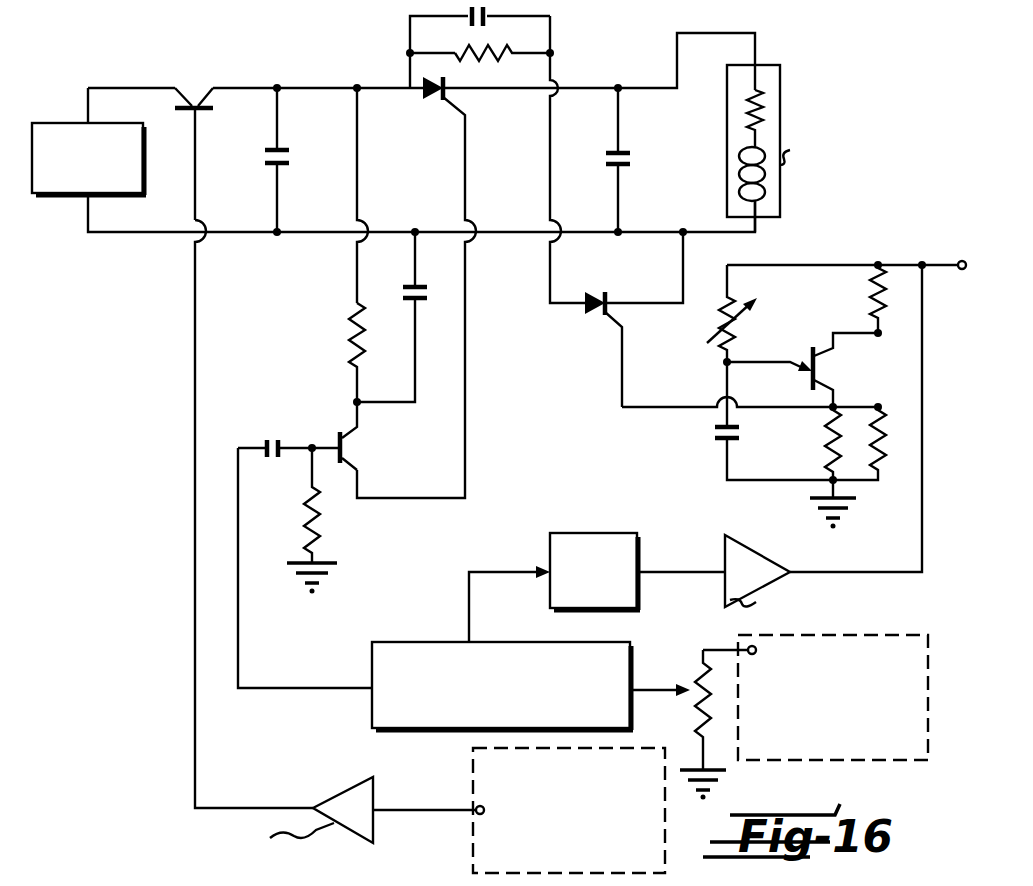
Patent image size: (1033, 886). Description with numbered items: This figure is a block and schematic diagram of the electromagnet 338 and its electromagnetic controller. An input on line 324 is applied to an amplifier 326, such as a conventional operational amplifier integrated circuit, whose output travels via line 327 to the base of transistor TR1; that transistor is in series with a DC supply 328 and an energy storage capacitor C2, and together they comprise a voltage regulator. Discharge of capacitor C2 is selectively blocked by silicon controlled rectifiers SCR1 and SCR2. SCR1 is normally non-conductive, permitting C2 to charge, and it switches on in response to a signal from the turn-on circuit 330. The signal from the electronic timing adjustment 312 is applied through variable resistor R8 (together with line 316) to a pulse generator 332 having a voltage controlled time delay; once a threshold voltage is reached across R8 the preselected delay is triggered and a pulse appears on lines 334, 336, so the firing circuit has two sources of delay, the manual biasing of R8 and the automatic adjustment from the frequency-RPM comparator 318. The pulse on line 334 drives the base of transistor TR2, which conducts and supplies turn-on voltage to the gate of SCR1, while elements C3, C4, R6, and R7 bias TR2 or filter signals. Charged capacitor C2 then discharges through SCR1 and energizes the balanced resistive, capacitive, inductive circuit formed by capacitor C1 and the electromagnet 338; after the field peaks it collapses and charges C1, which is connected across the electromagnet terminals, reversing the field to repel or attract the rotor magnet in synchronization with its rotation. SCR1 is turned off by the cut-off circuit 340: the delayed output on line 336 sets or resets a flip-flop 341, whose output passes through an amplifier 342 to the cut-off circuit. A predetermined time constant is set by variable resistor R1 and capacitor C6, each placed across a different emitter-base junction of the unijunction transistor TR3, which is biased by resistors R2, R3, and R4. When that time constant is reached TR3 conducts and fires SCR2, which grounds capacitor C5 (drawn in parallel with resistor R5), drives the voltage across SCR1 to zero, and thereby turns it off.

The DC supply 328 is at (60, 193).
The line 327 is at (194, 729).
The electromagnet 338 is at (780, 97).
The cut-off circuit 340 is at (794, 356).
The turn-on circuit 330 is at (332, 413).
The line 334 is at (240, 612).
The pulse generator 332 is at (354, 668).
The line 336 is at (519, 562).
The flip-flop 341 is at (622, 530).
The amplifier 342 is at (722, 555).
The line from pulse generator to potentiometer R8 316 is at (660, 687).
The electronic timing adjustment 312 is at (833, 697).
The frequency-RPM comparator 318 is at (569, 810).
The line 324 is at (447, 810).
The amplifier 326 is at (374, 824).
The transistor TR1 is at (211, 154).
The transistor TR2 is at (362, 451).
The unijunction transistor TR3 is at (802, 370).
The silicon controlled rectifier SCR1 is at (416, 287).
The silicon controlled rectifier SCR2 is at (587, 317).
The capacitor C1 is at (630, 160).
The energy storage capacitor C2 is at (290, 160).
The capacitor C3 is at (405, 317).
The capacitor C4 is at (275, 466).
The capacitor C5 is at (480, 47).
The capacitor C6 is at (756, 421).
The variable resistor R1 is at (739, 313).
The resistor R2 is at (875, 310).
The resistor R3 is at (875, 443).
The resistor R4 is at (816, 468).
The resistor R5 is at (480, 68).
The resistor R6 is at (336, 370).
The resistor R7 is at (320, 521).
The variable resistor R8 is at (705, 723).